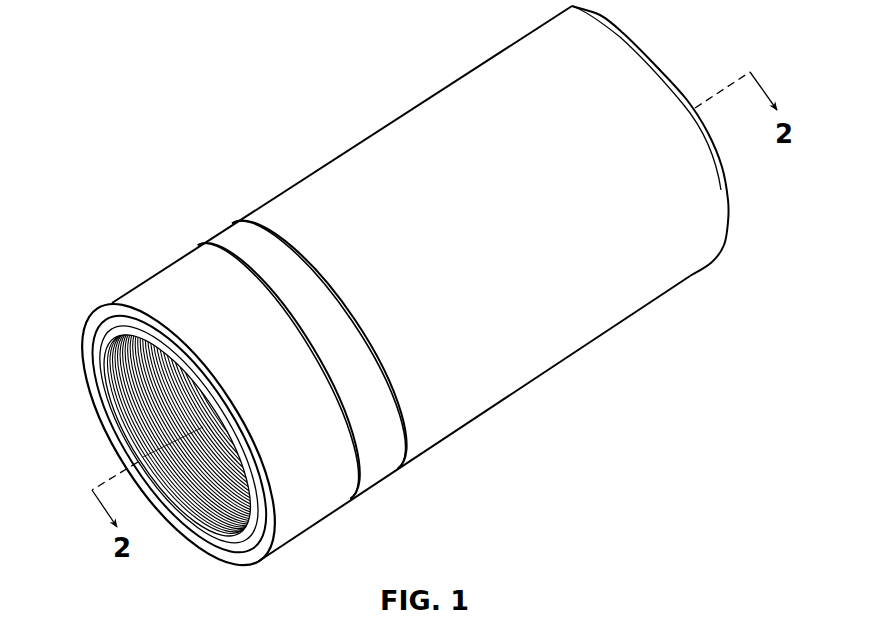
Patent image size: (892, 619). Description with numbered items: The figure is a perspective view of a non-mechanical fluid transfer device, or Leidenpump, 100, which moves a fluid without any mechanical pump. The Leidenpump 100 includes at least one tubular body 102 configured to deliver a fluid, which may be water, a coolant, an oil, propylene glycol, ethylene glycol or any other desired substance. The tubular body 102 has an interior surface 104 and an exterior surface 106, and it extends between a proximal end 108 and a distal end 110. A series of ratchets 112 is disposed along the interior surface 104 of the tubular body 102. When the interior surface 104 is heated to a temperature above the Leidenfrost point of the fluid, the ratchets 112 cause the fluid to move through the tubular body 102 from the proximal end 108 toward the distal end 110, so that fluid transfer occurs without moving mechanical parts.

The non-mechanical fluid transfer device 100 is at (421, 300).
The tubular body 102 is at (623, 329).
The interior surface 104 is at (186, 411).
The exterior surface 106 is at (150, 291).
The proximal end 108 is at (733, 204).
The distal end 110 is at (208, 563).
The series of ratchets 112 is at (118, 390).